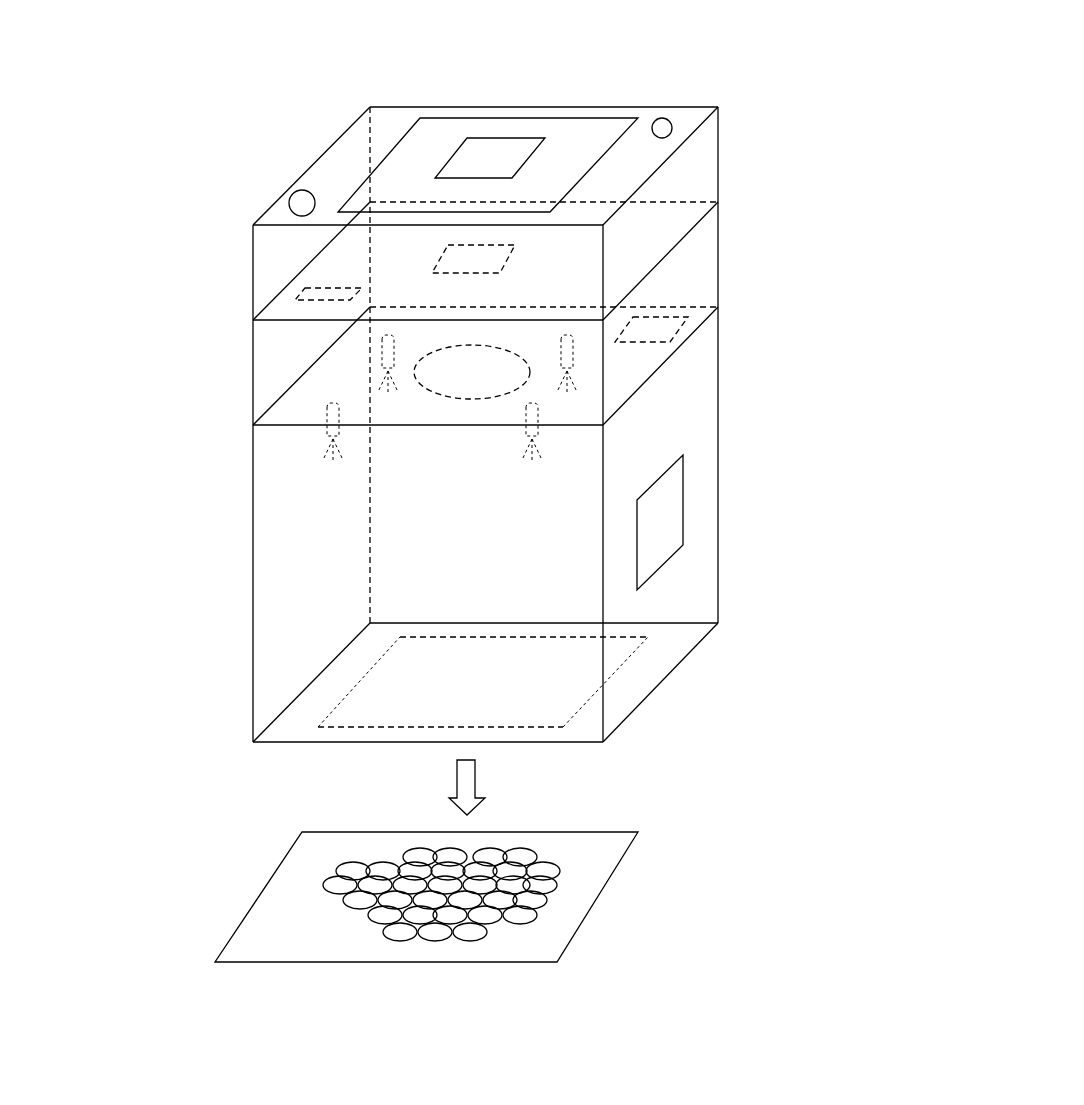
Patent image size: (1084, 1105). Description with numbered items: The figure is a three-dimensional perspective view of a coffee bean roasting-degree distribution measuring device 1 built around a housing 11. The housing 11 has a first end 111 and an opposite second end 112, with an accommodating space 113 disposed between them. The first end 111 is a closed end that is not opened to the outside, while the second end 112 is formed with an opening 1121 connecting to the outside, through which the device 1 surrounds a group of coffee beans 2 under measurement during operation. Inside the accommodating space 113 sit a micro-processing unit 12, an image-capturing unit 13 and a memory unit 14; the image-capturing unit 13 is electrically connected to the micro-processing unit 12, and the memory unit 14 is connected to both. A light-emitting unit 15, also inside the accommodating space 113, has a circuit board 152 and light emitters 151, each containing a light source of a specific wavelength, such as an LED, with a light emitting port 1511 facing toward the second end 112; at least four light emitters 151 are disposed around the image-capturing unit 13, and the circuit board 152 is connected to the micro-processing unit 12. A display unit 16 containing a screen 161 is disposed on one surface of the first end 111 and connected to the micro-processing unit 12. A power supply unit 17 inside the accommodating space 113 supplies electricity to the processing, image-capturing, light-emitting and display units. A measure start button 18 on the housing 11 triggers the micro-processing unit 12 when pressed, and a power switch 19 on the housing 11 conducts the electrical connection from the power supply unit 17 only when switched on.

The coffee bean roasting-degree distribution measuring device 1 is at (91, 42).
The housing 11 is at (370, 107).
The first end 111 is at (560, 113).
The second end 112 is at (558, 742).
The accommodating space 113 is at (467, 475).
The opening 1121 is at (377, 712).
The micro-processing unit 12 is at (510, 250).
The image-capturing unit 13 is at (520, 388).
The memory unit 14 is at (295, 298).
The light-emitting unit 15 is at (857, 332).
The light emitter 151 is at (575, 353).
The light emitting port 1511 is at (337, 436).
The circuit board 152 is at (677, 332).
The display unit 16 is at (580, 178).
The screen 161 is at (507, 137).
The power supply unit 17 is at (657, 557).
The measure start button 18 is at (289, 203).
The power switch 19 is at (673, 130).
The coffee beans 2 is at (535, 885).